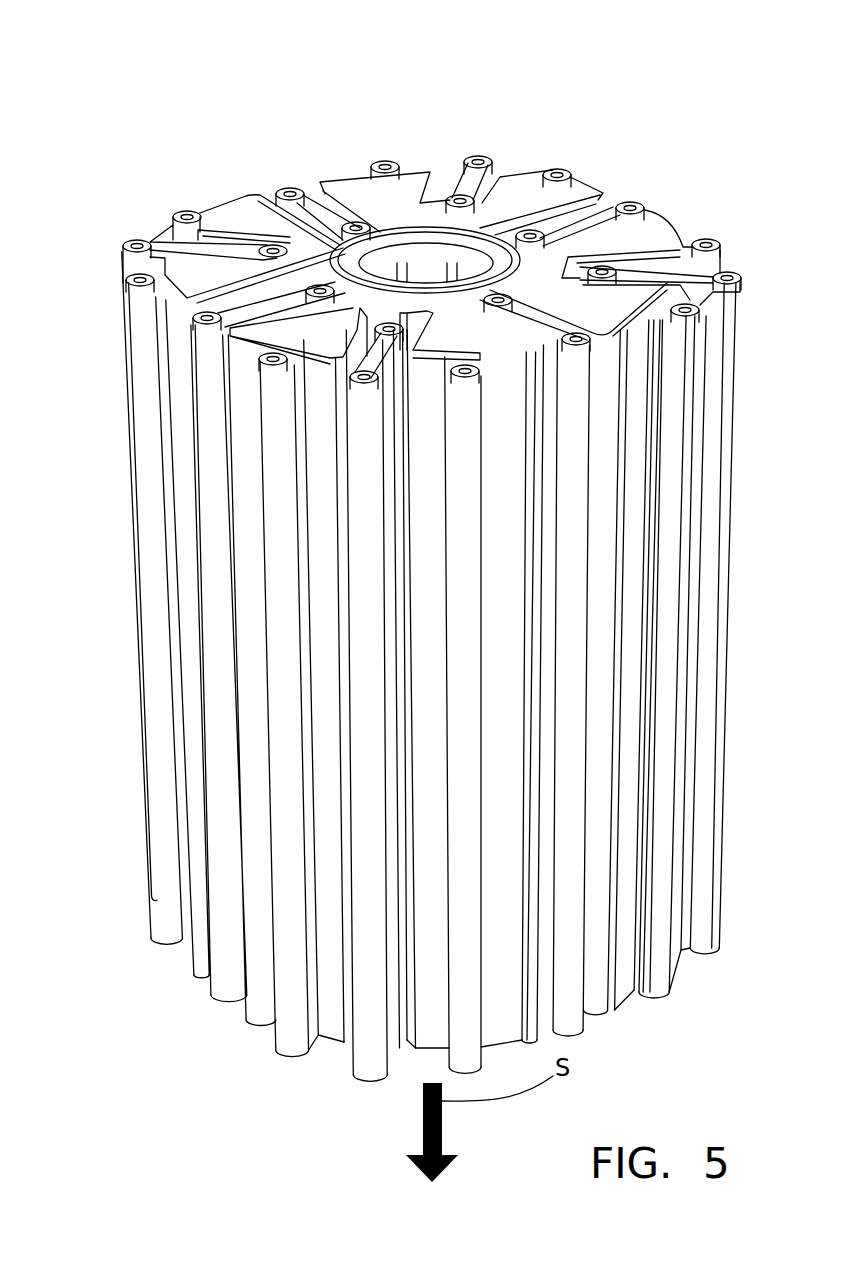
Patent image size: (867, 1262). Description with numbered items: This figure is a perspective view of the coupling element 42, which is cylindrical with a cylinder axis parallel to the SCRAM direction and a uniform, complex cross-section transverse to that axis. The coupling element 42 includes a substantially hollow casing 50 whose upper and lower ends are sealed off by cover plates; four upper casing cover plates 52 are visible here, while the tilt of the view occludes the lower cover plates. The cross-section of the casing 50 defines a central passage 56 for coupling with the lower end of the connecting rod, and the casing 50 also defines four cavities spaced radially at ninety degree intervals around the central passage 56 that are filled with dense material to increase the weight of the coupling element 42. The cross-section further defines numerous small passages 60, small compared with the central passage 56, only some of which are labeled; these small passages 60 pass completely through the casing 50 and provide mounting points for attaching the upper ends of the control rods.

The coupling element 42 is at (162, 190).
The hollow casing 50 is at (127, 607).
The upper casing cover plates 52 is at (262, 215).
The central passage 56 is at (417, 263).
The small passages 60 is at (600, 200).